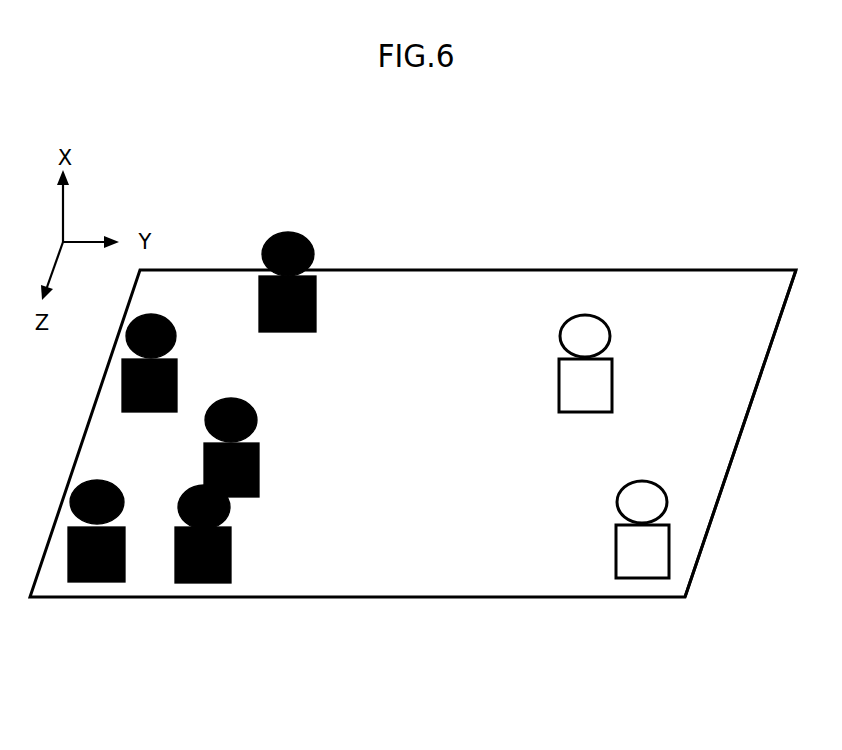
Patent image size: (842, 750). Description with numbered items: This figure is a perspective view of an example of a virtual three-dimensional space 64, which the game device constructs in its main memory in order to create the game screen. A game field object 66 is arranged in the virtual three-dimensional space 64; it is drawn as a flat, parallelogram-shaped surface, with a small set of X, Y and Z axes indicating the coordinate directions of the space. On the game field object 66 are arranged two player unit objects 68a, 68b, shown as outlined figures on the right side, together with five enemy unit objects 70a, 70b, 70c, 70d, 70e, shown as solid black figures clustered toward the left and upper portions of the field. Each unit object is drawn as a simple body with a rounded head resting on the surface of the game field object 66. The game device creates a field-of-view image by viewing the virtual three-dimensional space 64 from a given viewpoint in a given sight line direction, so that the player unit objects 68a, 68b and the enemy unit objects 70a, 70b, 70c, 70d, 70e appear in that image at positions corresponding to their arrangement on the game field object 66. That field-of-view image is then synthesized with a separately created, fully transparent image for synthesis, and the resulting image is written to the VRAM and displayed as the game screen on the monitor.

The virtual three-dimensional space 64 is at (396, 637).
The game field object 66 is at (714, 512).
The player unit object 68a is at (613, 377).
The player unit object 68b is at (642, 578).
The enemy unit object 70a is at (314, 245).
The enemy unit object 70b is at (121, 383).
The enemy unit object 70c is at (203, 450).
The enemy unit object 70d is at (82, 582).
The enemy unit object 70e is at (196, 583).